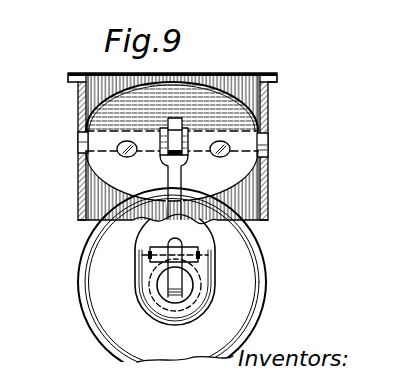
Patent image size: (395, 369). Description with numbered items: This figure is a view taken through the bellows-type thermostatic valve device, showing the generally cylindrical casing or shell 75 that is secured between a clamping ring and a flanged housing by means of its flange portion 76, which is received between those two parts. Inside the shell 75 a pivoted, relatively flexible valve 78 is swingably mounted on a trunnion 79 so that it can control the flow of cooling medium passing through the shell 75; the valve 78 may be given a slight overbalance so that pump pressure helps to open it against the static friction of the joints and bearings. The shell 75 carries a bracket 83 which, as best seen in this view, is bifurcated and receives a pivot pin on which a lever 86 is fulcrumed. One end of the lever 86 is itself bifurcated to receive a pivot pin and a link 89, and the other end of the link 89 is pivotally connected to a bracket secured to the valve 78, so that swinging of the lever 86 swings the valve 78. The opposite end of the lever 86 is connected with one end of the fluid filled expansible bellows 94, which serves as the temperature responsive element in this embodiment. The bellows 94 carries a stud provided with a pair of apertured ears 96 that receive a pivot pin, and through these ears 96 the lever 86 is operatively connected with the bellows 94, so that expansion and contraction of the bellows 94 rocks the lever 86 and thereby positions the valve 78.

The casing 75 is at (78, 195).
The flange portion 76 is at (68, 76).
The valve 78 is at (86, 117).
The trunnion 79 is at (86, 148).
The bracket 83 is at (157, 232).
The lever 86 is at (182, 180).
The link 89 is at (182, 123).
The expansible bellows 94 is at (240, 213).
The ears 96 is at (190, 283).